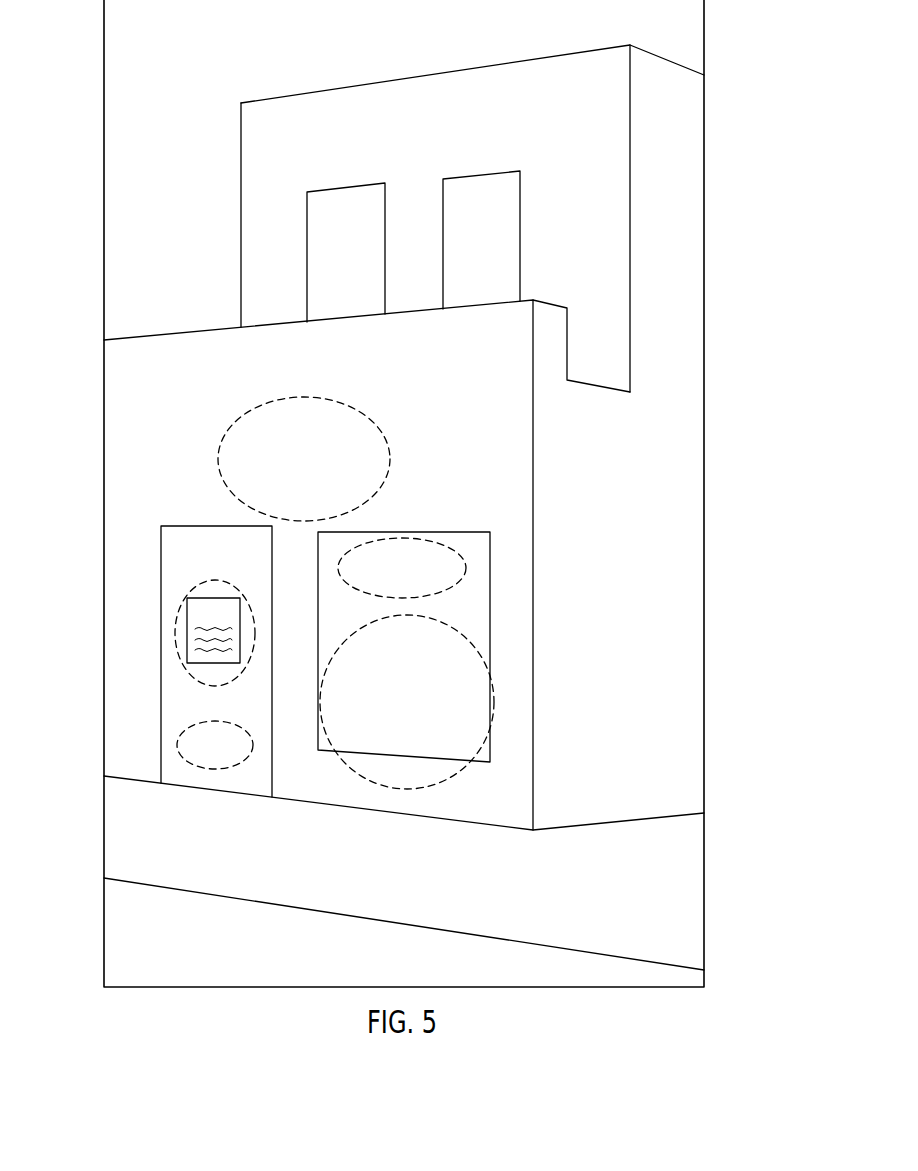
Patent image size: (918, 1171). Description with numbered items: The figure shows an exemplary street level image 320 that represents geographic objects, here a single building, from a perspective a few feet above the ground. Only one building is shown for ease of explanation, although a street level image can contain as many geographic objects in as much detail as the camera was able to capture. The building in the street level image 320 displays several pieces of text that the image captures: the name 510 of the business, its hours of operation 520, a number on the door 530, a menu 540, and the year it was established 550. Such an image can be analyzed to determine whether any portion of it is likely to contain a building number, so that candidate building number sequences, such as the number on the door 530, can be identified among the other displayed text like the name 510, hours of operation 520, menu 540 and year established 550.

The street level image 320 is at (709, 460).
The name of a business 510 is at (222, 440).
The hours of operation 520 is at (457, 773).
The number on the door 530 is at (185, 758).
The menu 540 is at (177, 617).
The year it was established 550 is at (463, 570).